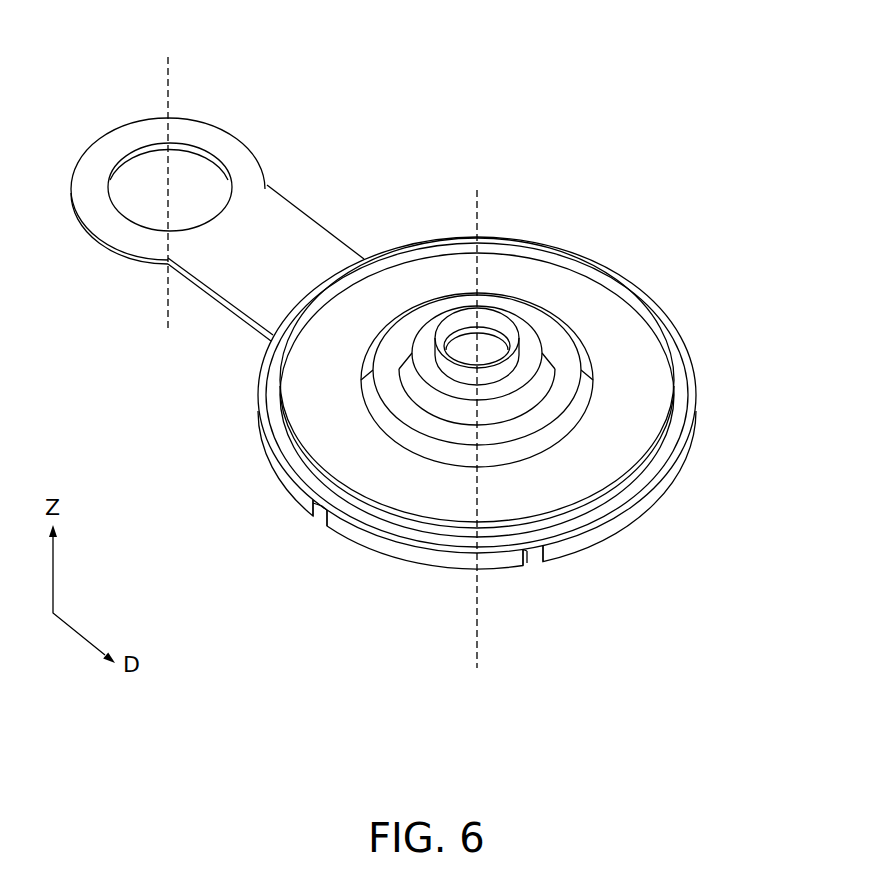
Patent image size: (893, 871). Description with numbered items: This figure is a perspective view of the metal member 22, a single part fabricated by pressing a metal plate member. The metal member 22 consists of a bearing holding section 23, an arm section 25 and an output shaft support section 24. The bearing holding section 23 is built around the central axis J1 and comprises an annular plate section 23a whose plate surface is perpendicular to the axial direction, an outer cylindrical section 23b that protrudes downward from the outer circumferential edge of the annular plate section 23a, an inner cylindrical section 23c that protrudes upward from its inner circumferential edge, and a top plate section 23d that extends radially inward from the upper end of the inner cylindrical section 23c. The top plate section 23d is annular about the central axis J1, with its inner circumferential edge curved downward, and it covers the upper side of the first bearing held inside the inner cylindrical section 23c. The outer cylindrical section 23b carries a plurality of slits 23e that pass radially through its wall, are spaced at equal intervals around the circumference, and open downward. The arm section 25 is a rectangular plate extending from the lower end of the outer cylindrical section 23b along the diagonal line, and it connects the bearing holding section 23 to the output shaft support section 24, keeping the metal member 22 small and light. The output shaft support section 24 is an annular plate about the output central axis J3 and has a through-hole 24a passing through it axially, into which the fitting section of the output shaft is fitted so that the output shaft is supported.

The metal member 22 is at (680, 227).
The bearing holding section 23 is at (684, 332).
The annular plate section 23a is at (628, 425).
The outer cylindrical section 23b is at (503, 560).
The inner cylindrical section 23c is at (552, 375).
The top plate section 23d is at (512, 310).
The slits 23e is at (322, 513).
The output shaft support section 24 is at (205, 133).
The through-hole 24a is at (122, 200).
The arm section 25 is at (308, 255).
The central axis J1 is at (482, 213).
The output central axis J3 is at (170, 80).